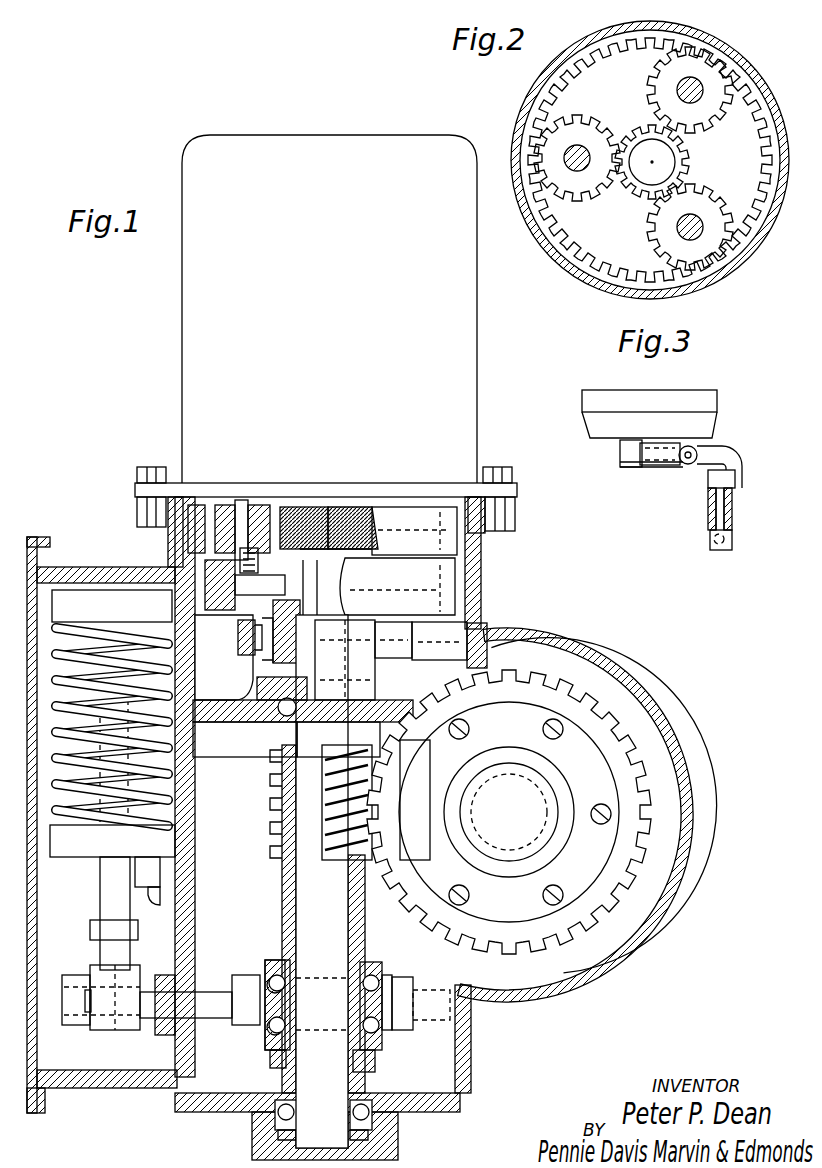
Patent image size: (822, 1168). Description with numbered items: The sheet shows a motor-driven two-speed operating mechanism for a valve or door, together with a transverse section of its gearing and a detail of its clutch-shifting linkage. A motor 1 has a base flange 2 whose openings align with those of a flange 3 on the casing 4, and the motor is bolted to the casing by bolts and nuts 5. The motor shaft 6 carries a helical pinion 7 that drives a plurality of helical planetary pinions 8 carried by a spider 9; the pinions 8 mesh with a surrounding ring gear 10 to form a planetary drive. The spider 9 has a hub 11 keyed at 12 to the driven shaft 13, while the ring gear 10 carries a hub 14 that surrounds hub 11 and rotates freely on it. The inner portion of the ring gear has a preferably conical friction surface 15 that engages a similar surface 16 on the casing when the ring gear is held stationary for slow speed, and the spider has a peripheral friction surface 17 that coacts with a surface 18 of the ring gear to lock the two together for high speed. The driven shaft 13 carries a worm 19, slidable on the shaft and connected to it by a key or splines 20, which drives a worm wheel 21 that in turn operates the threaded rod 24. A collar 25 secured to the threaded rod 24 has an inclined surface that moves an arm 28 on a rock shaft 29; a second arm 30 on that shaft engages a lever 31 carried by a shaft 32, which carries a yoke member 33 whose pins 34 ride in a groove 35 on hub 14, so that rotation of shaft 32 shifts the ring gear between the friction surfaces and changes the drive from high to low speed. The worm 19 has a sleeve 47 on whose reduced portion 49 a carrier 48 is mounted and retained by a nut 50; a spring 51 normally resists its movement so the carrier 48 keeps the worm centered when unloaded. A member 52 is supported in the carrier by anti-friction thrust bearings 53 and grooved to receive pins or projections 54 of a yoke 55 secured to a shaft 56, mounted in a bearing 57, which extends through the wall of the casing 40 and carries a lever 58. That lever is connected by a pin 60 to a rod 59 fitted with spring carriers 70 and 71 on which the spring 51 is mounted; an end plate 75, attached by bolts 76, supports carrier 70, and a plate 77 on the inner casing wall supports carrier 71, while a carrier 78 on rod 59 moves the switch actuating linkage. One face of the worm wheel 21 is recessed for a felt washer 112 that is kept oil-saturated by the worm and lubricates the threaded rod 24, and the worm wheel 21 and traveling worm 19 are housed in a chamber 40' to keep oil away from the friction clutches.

In FIG. 1, the motor 1 is at (465, 373).
In FIG. 1, the flange 2 is at (517, 492).
In FIG. 1, the flange 3 is at (485, 514).
In FIG. 1, the casing 4 is at (481, 572).
In FIG. 1, the bolts and nuts 5 is at (508, 470).
In FIG. 2, the motor shaft 6 is at (644, 172).
In FIG. 1, the motor shaft 6 is at (312, 507).
In FIG. 2, the helical pinion 7 is at (688, 160).
In FIG. 1, the helical pinion 7 is at (345, 507).
In FIG. 2, the helical planetary pinions 8 is at (622, 92).
In FIG. 1, the helical planetary pinions 8 is at (224, 505).
In FIG. 1, the spider 9 is at (243, 505).
In FIG. 2, the ring gear 10 is at (556, 243).
In FIG. 3, the ring gear 10 is at (717, 400).
In FIG. 1, the ring gear 10 is at (198, 505).
In FIG. 1, the hub 11 is at (285, 588).
In FIG. 1, the key 12 is at (350, 566).
In FIG. 1, the driven shaft 13 is at (340, 592).
In FIG. 3, the hub 14 is at (620, 466).
In FIG. 1, the hub 14 is at (303, 686).
In FIG. 1, the friction surface 15 is at (482, 592).
In FIG. 1, the friction surface 16 is at (486, 612).
In FIG. 1, the peripheral friction surface 17 is at (160, 575).
In FIG. 1, the friction surface 18 is at (256, 659).
In FIG. 1, the worm 19 is at (268, 805).
In FIG. 1, the key or splines 20 is at (283, 870).
In FIG. 1, the worm wheel 21 is at (630, 745).
In FIG. 1, the threaded rod 24 is at (509, 812).
In FIG. 1, the collar 25 is at (560, 800).
In FIG. 3, the arm 28 is at (719, 550).
In FIG. 1, the arm 28 is at (440, 814).
In FIG. 3, the rock shaft 29 is at (726, 514).
In FIG. 1, the rock shaft 29 is at (400, 860).
In FIG. 3, the second arm 30 is at (735, 482).
In FIG. 1, the second arm 30 is at (381, 686).
In FIG. 3, the lever 31 is at (735, 462).
In FIG. 1, the lever 31 is at (338, 688).
In FIG. 3, the shaft 32 is at (696, 452).
In FIG. 1, the shaft 32 is at (490, 657).
In FIG. 3, the yoke member 33 is at (668, 463).
In FIG. 1, the yoke member 33 is at (238, 645).
In FIG. 3, the pins 34 is at (638, 467).
In FIG. 1, the pins 34 is at (246, 652).
In FIG. 1, the groove 35 is at (258, 665).
In FIG. 1, the casing 40 is at (590, 815).
In FIG. 1, the chamber 40' is at (603, 811).
In FIG. 1, the sleeve 47 is at (282, 908).
In FIG. 1, the carrier 48 is at (268, 962).
In FIG. 1, the reduced portion 49 is at (383, 968).
In FIG. 1, the nut 50 is at (376, 1062).
In FIG. 1, the spring 51 is at (70, 812).
In FIG. 1, the member 52 is at (266, 1040).
In FIG. 1, the anti-friction thrust bearings 53 is at (392, 980).
In FIG. 1, the pins or projections 54 is at (421, 1003).
In FIG. 1, the yoke 55 is at (240, 978).
In FIG. 1, the shaft 56 is at (215, 1010).
In FIG. 1, the bearing 57 is at (162, 1040).
In FIG. 1, the lever 58 is at (100, 1025).
In FIG. 1, the rod 59 is at (100, 905).
In FIG. 1, the pin 60 is at (85, 1002).
In FIG. 1, the spring carrier 70 is at (92, 845).
In FIG. 1, the spring carrier 71 is at (68, 580).
In FIG. 1, the end plate 75 is at (145, 862).
In FIG. 1, the bolts 76 is at (153, 903).
In FIG. 1, the plate 77 is at (116, 580).
In FIG. 1, the carrier 78 is at (90, 930).
In FIG. 1, the felt washer 112 is at (540, 720).